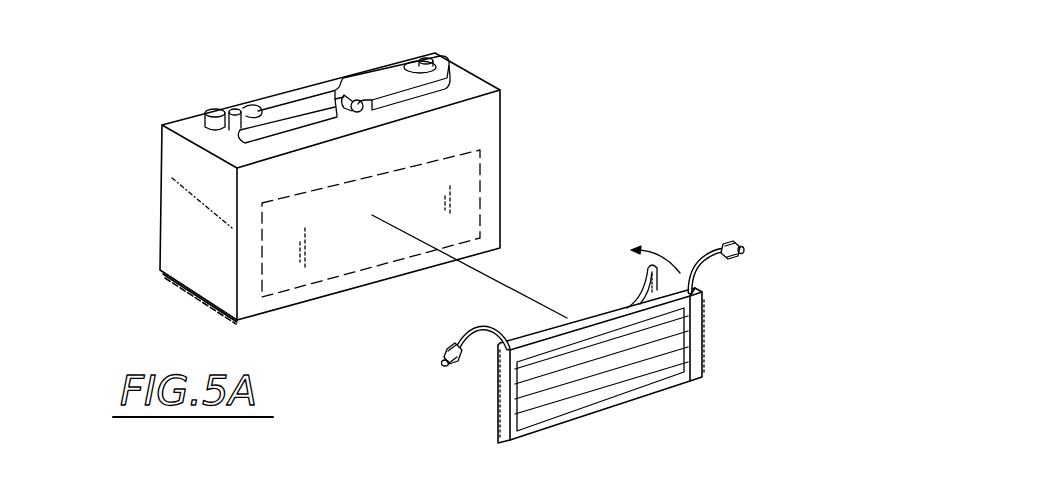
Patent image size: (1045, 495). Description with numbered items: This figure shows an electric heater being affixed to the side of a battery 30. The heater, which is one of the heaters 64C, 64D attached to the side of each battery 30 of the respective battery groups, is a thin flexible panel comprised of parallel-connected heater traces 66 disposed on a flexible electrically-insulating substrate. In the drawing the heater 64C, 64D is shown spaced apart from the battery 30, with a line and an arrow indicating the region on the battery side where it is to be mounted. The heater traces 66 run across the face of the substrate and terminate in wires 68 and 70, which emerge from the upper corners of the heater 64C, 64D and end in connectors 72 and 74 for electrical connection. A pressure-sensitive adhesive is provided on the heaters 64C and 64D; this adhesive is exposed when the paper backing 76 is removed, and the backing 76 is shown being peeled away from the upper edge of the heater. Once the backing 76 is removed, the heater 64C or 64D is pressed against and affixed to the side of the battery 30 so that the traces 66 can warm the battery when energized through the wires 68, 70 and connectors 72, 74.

The battery 30 is at (158, 175).
The heater 64C is at (622, 317).
The heater 64D is at (622, 317).
The heater traces 66 is at (657, 337).
The wire 68 is at (448, 350).
The wire 70 is at (729, 238).
The connector 72 is at (447, 372).
The connector 74 is at (735, 242).
The paper backing 76 is at (645, 284).